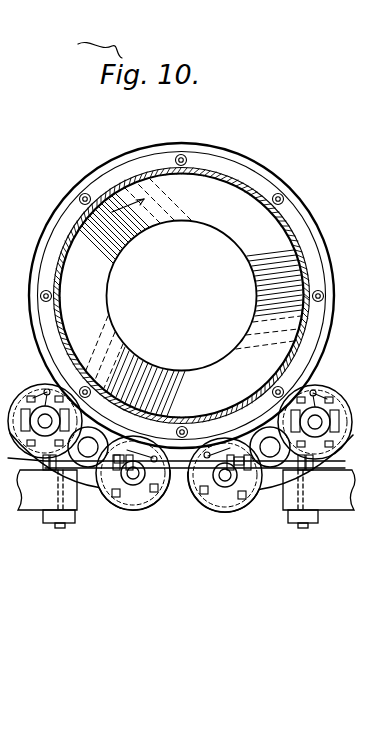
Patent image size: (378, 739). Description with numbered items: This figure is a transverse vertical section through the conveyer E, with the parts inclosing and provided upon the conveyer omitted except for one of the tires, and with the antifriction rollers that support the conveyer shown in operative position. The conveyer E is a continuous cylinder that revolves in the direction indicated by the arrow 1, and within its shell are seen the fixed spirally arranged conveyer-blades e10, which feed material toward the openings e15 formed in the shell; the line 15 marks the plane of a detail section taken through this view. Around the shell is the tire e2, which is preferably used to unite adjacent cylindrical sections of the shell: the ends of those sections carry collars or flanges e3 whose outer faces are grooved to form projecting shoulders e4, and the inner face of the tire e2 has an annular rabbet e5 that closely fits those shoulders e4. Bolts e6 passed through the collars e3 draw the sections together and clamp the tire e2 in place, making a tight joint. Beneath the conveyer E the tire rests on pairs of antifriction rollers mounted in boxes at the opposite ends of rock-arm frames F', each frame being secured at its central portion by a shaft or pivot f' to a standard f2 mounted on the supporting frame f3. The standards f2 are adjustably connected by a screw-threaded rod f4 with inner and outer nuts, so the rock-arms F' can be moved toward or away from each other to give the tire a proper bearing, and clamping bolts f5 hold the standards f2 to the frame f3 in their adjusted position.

The conveyer E is at (290, 223).
The tire e2 is at (200, 150).
The collar or flange e3 is at (143, 167).
The projecting shoulder e4 is at (108, 178).
The annular groove or rabbet e5 is at (237, 165).
The bolt e6 is at (181, 154).
The conveyer-blade e10 is at (103, 228).
The opening e15 is at (186, 173).
The section line 15— 15 is at (181, 154).
The arrow 1 is at (128, 210).
The shaft or pivot f' is at (178, 454).
The frame or rock-arm F' is at (181, 485).
The standard f2 is at (67, 471).
The supporting frame f3 is at (177, 499).
The bolt or rod f4 is at (182, 465).
The clamping bolt f5 is at (350, 459).